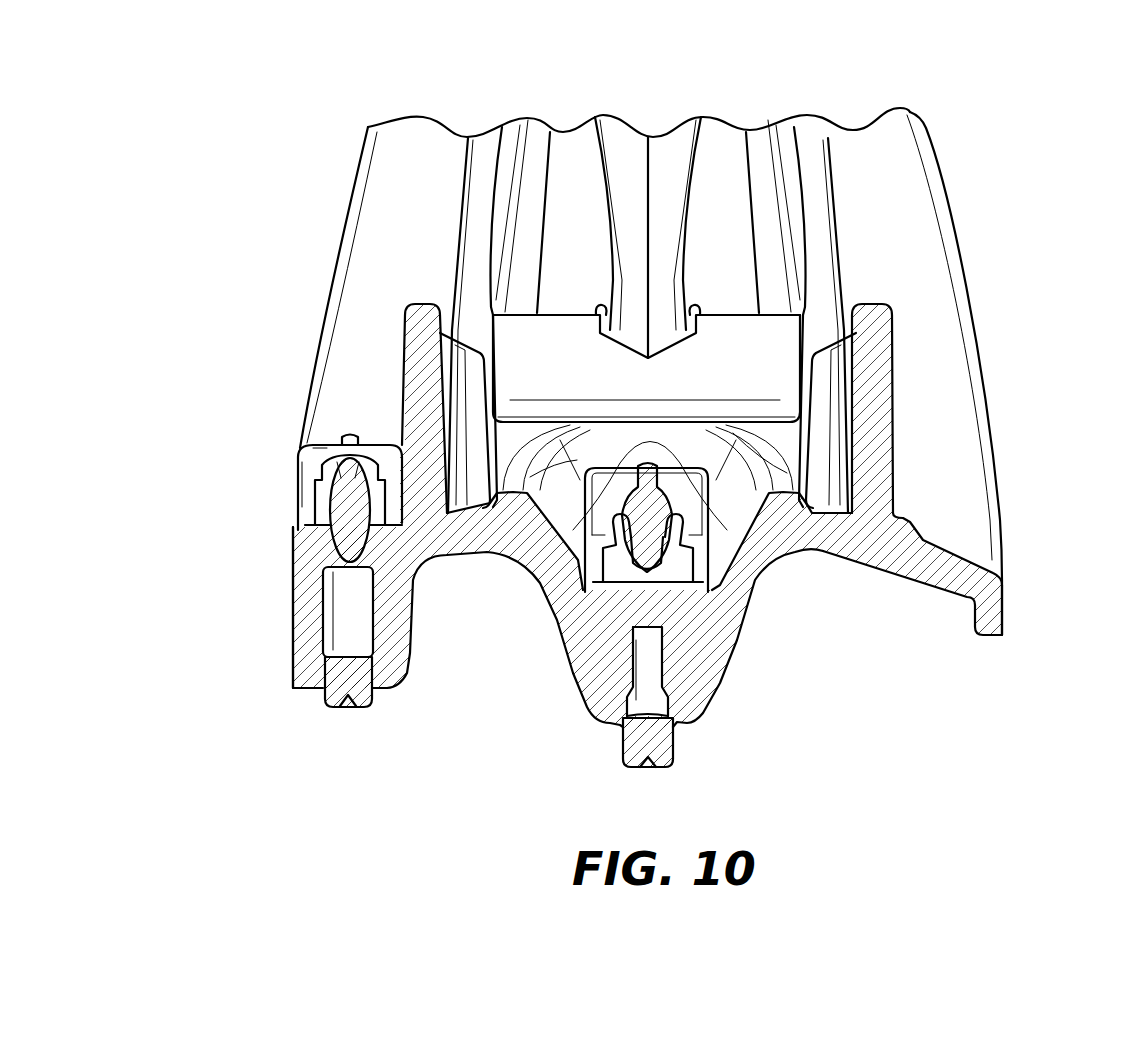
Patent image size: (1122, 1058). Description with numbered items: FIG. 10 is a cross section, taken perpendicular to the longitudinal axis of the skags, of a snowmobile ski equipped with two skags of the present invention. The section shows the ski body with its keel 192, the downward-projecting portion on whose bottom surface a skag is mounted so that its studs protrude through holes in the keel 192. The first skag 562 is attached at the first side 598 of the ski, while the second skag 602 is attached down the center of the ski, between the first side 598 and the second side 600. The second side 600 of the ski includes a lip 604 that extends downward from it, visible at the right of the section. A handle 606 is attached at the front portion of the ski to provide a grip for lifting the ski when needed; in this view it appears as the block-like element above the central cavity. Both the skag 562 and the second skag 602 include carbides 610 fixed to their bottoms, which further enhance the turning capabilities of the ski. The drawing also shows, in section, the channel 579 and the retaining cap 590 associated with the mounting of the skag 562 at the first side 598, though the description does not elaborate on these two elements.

The keel 192 is at (400, 660).
The skag 562 is at (339, 694).
The pin channel 579 is at (340, 630).
The retaining cap 590 is at (307, 510).
The first side 598 is at (248, 598).
The second side 600 is at (943, 545).
The second skag 602 is at (662, 743).
The lip 604 is at (990, 618).
The handle 606 is at (663, 257).
The carbides 610 is at (353, 709).